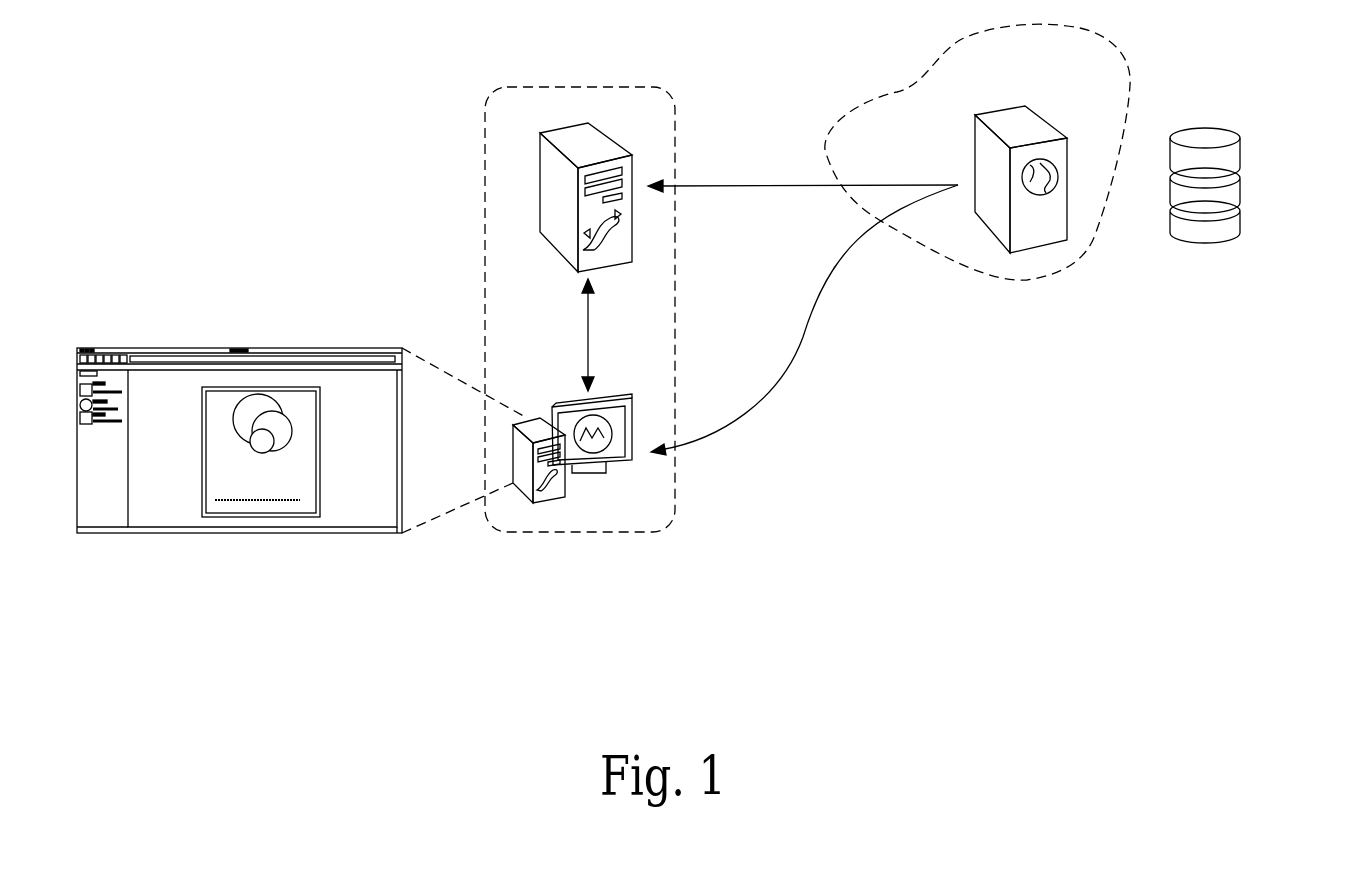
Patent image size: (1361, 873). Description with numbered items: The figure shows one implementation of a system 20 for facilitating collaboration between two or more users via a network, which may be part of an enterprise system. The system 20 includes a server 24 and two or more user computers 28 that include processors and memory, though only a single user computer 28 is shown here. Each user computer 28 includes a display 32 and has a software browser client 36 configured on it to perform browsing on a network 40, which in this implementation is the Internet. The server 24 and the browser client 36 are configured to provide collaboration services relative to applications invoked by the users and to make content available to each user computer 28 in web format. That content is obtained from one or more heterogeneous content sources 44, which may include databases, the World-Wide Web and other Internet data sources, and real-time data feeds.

The system 20 is at (1027, 497).
The server 24 is at (613, 139).
The user computer 28 is at (550, 503).
The display 32 is at (613, 397).
The software browser client 36 is at (288, 533).
The network 40 is at (1130, 75).
The content sources 44 is at (1242, 180).